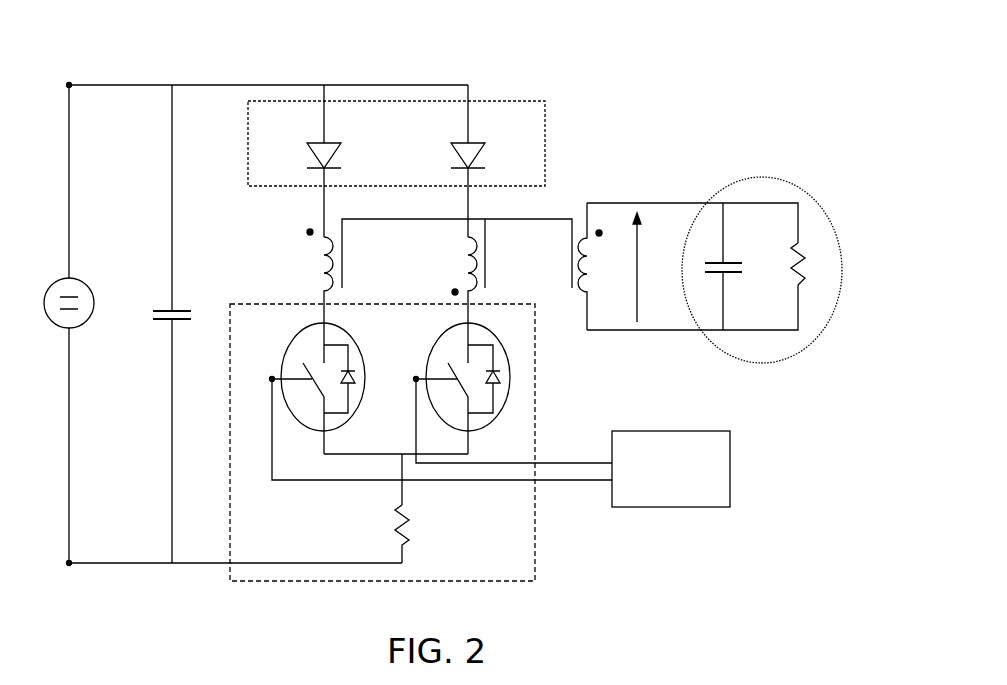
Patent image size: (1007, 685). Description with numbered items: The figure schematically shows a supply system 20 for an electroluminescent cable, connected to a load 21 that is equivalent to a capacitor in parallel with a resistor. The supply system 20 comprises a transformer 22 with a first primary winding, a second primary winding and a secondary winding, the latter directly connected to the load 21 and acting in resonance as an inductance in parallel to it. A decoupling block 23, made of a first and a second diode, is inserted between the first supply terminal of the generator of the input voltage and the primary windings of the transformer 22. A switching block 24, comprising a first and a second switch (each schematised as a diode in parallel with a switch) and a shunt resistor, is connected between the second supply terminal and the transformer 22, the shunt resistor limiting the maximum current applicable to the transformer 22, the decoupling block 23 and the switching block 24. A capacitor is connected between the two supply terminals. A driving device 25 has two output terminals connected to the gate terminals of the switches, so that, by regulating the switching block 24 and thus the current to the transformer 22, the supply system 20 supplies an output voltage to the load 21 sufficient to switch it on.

The supply system 20 is at (632, 120).
The load 21 is at (775, 178).
The transformer 22 is at (417, 217).
The decoupling block 23 is at (273, 110).
The switching block 24 is at (525, 547).
The driving device 25 is at (695, 472).